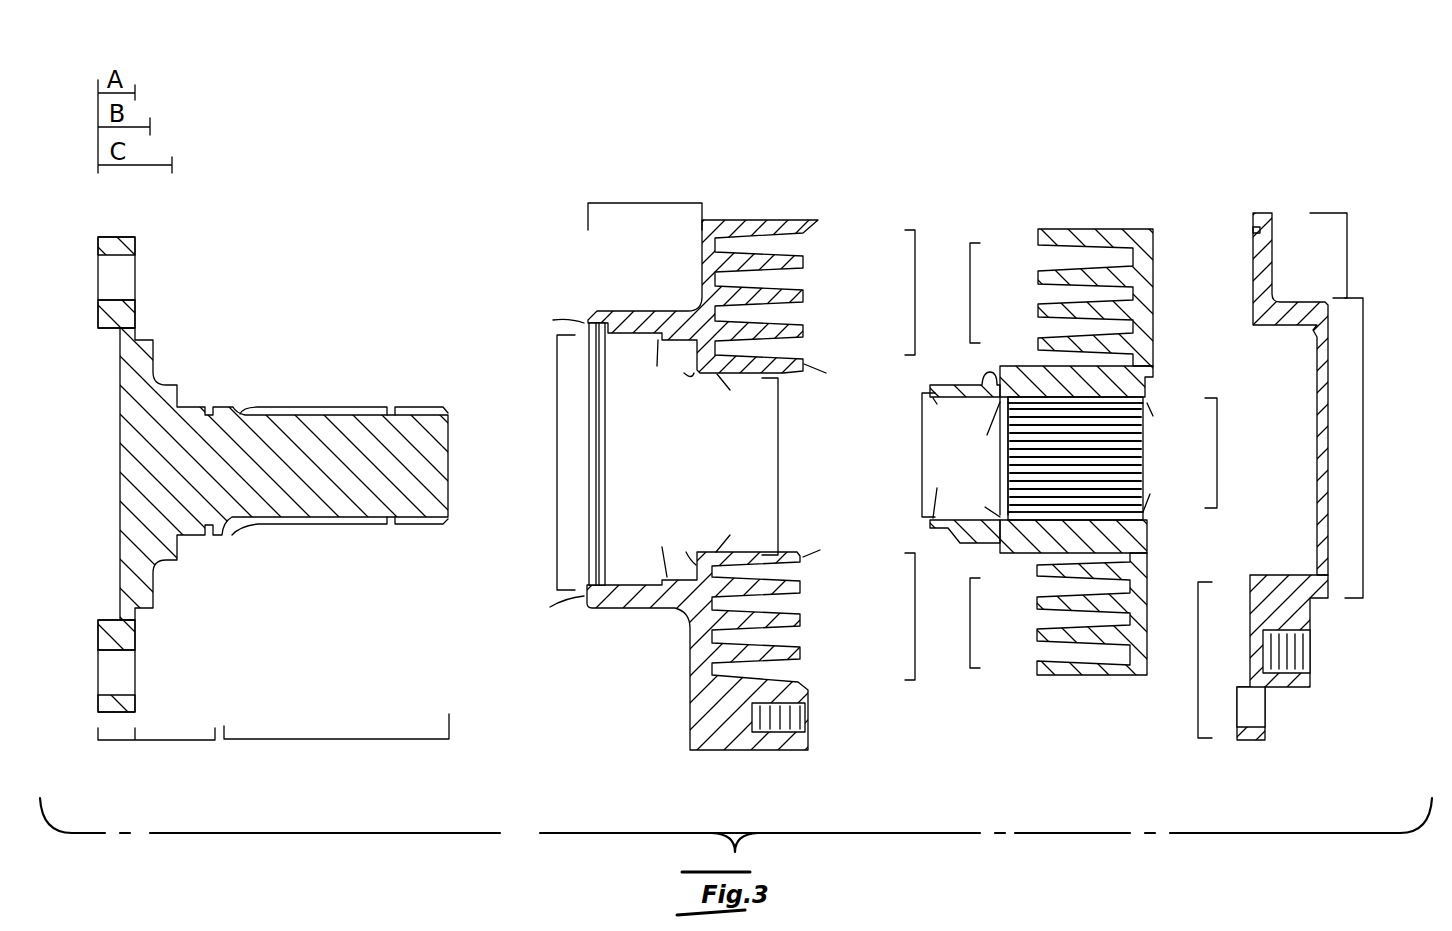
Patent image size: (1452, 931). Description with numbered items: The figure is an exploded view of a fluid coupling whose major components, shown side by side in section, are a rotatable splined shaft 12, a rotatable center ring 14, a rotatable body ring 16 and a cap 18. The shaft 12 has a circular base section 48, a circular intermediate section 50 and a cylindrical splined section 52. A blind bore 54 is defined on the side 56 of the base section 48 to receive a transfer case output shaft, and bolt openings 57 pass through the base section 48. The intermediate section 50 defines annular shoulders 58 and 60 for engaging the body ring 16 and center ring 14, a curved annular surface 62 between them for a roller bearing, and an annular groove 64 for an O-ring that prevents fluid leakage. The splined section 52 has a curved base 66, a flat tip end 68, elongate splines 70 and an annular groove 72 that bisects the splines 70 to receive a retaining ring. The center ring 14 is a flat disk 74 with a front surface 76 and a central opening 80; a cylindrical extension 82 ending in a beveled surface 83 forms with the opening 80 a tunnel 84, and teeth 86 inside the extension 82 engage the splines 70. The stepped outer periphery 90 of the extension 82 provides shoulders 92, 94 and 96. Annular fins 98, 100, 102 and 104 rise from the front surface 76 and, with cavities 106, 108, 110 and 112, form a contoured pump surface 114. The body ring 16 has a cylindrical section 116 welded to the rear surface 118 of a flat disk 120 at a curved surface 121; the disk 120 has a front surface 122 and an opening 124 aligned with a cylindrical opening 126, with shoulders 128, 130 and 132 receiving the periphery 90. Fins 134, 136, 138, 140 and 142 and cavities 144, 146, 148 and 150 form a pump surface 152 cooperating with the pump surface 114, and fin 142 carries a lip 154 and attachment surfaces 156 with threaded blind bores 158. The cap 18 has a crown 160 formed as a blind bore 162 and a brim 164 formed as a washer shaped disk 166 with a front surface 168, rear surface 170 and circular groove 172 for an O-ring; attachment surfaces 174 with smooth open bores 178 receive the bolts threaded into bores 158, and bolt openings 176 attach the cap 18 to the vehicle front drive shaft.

The splined shaft 12 is at (300, 282).
The center ring 14 is at (1081, 197).
The body ring 16 is at (692, 158).
The cap 18 is at (1287, 197).
The base section 48 is at (117, 740).
The intermediate section 50 is at (177, 740).
The splined section 52 is at (328, 740).
The blind bore 54 is at (119, 378).
The side 56 is at (97, 314).
The bolt openings 57 is at (97, 270).
The annular shoulder 58 is at (154, 350).
The annular shoulder 60 is at (180, 393).
The curved annular surface 62 is at (160, 378).
The annular groove 64 is at (220, 398).
The curved base 66 is at (287, 402).
The tip end 68 is at (450, 432).
The splines 70 is at (352, 406).
The annular groove 72 is at (391, 406).
The flat disk 74 is at (1142, 270).
The front surface 76 is at (1153, 337).
The opening 80 is at (1225, 452).
The cylindrical extension 82 is at (1147, 398).
The annular beveled surface 83 is at (928, 393).
The elongate tunnel 84 is at (912, 452).
The teeth 86 is at (1025, 456).
The outer periphery 90 is at (1102, 345).
The annular shoulder 92 is at (988, 372).
The annular shoulder 94 is at (988, 392).
The annular shoulder 96 is at (935, 384).
The annular fin 98 is at (1062, 344).
The annular fin 100 is at (1078, 323).
The annular fin 102 is at (1068, 277).
The annular fin 104 is at (1042, 237).
The annular cavity 106 is at (1125, 382).
The annular cavity 108 is at (1098, 323).
The annular cavity 110 is at (1078, 291).
The annular cavity 112 is at (1070, 256).
The pump surface 114 is at (965, 325).
The cylindrical section 116 is at (643, 203).
The rear surface 118 is at (700, 243).
The flat disk 120 is at (705, 237).
The curved surface 121 is at (695, 307).
The front surface 122 is at (745, 265).
The opening 124 is at (797, 452).
The cylindrical opening 126 is at (548, 452).
The annular shoulder 128 is at (627, 336).
The annular shoulder 130 is at (640, 311).
The annular shoulder 132 is at (700, 374).
The annular fin 134 is at (782, 374).
The annular fin 136 is at (805, 331).
The annular fin 138 is at (805, 297).
The annular fin 140 is at (805, 263).
The annular fin 142 is at (795, 221).
The annular cavity 144 is at (775, 348).
The annular cavity 146 is at (773, 313).
The annular cavity 148 is at (773, 279).
The annular cavity 150 is at (773, 245).
The pump surface 152 is at (920, 290).
The annular lip 154 is at (818, 220).
The attachment surfaces 156 is at (735, 751).
The threaded blind bores 158 is at (810, 728).
The crown 160 is at (1372, 452).
The blind bore 162 is at (1312, 410).
The brim 164 is at (1352, 255).
The washer shaped disk 166 is at (1257, 215).
The front surface 168 is at (1253, 258).
The rear surface 170 is at (1273, 254).
The circular groove 172 is at (1252, 230).
The attachment surfaces 174 is at (1295, 610).
The bolt openings 176 is at (1312, 650).
The smooth open bores 178 is at (1262, 717).